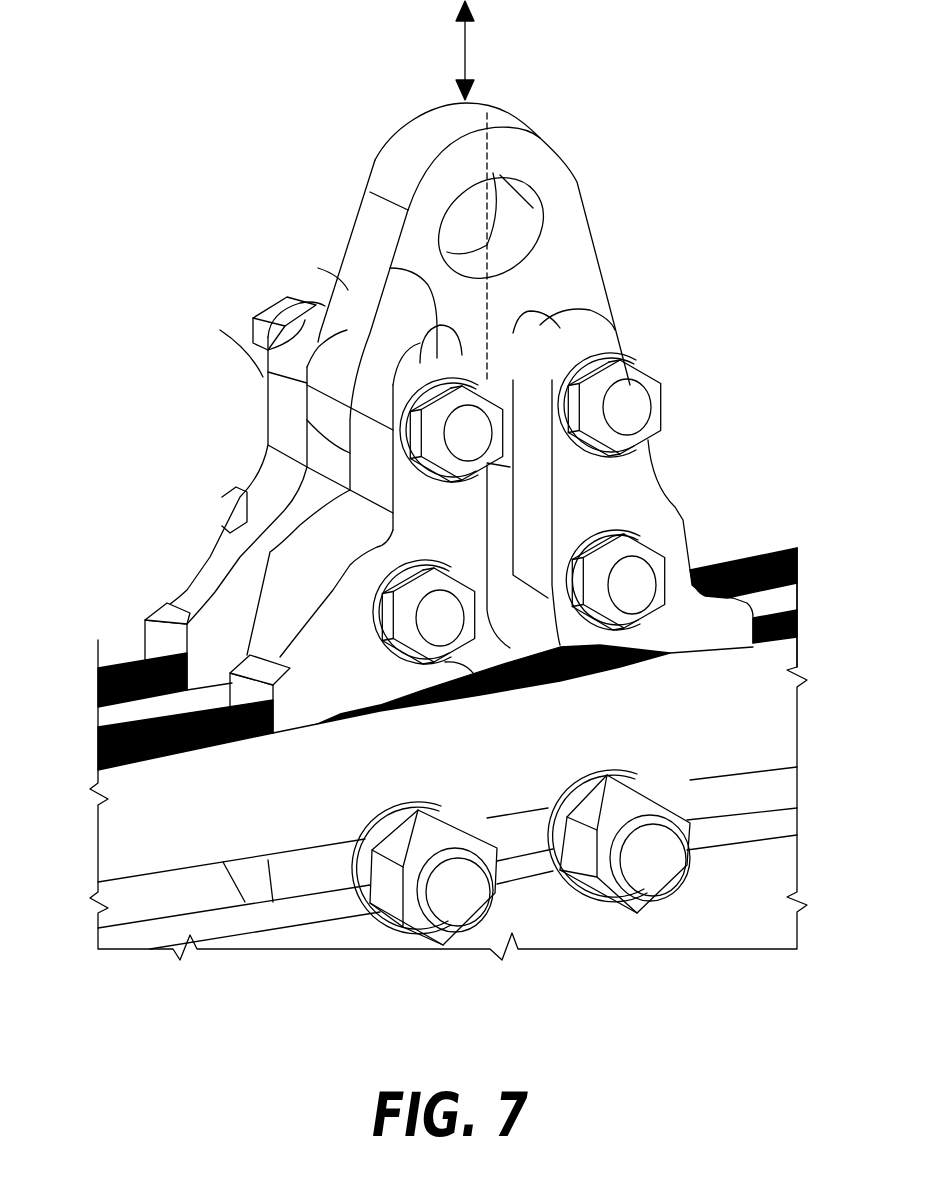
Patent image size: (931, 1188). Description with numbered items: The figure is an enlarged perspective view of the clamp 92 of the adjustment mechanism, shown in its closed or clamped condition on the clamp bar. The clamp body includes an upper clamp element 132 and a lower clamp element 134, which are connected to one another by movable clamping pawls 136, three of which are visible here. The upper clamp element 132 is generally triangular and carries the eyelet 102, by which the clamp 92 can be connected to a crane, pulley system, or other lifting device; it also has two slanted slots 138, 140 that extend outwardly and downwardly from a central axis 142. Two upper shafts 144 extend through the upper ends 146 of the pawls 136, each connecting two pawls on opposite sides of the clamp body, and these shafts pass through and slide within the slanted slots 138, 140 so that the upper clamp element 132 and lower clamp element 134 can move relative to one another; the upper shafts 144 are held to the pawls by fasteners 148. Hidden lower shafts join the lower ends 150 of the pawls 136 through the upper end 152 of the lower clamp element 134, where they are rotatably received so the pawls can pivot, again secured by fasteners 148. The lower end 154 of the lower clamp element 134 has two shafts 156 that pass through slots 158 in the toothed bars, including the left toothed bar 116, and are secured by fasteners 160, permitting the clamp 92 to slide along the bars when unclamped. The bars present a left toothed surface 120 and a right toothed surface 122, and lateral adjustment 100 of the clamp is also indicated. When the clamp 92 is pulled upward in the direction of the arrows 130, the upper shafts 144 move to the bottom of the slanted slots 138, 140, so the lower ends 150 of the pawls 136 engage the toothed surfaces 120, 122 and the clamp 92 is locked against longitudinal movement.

The clamp 92 is at (688, 136).
The lateral adjustment 100 is at (223, 730).
The eyelet 102 is at (463, 205).
The left toothed bar 116 is at (730, 917).
The left toothed surface 120 is at (113, 733).
The right toothed surface 122 is at (108, 672).
The arrows 130 is at (469, 50).
The upper clamp element 132 is at (581, 228).
The lower clamp element 134 is at (497, 643).
The clamping pawls 136 is at (227, 557).
The slanted slot 138 is at (390, 268).
The slanted slot 140 is at (540, 310).
The central axis 142 is at (487, 243).
The upper shafts 144 is at (540, 330).
The upper ends 146 is at (392, 370).
The fasteners 148 is at (243, 347).
The lower ends 150 is at (353, 697).
The upper end 152 is at (290, 583).
The lower end 154 is at (282, 887).
The shafts 156 is at (340, 870).
The slots 158 is at (775, 792).
The fasteners 160 is at (453, 913).